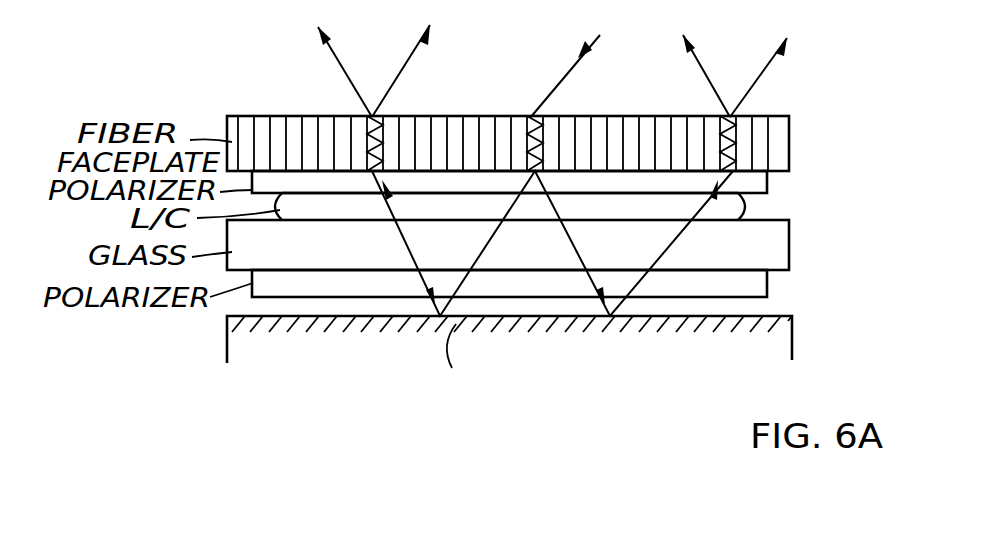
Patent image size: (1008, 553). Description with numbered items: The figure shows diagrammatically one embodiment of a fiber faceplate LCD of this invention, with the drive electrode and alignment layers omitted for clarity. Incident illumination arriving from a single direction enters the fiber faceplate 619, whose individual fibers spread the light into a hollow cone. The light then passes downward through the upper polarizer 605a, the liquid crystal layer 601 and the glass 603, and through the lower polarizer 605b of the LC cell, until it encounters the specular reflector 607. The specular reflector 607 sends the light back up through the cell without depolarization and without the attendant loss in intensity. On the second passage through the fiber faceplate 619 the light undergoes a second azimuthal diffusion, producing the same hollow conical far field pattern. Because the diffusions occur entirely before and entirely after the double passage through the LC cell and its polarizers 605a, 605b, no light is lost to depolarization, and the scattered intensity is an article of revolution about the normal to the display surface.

The fiber faceplate 619 is at (790, 127).
The polarizer 605a is at (768, 181).
The liquid crystal layer 601 is at (748, 205).
The glass 603 is at (789, 247).
The polarizer 605b is at (768, 289).
The specular reflector 607 is at (793, 347).